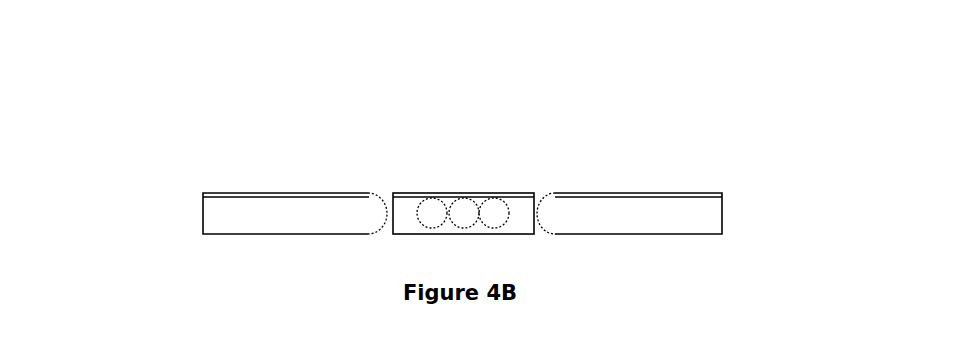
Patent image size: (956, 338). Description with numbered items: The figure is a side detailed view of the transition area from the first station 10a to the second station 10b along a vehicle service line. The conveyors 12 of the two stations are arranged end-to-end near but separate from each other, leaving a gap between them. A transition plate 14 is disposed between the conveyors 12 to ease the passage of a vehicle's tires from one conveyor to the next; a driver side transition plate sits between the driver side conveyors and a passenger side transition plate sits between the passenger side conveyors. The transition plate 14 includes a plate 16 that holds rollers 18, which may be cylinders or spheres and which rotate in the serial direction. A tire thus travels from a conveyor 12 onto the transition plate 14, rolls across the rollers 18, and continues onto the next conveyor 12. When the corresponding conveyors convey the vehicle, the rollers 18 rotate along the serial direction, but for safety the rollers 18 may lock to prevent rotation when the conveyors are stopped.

The first station 10a is at (747, 217).
The second station 10b is at (148, 220).
The conveyor 12 is at (319, 193).
The transition plate 14 is at (518, 110).
The plate 16 is at (518, 197).
The roller 18 is at (433, 205).